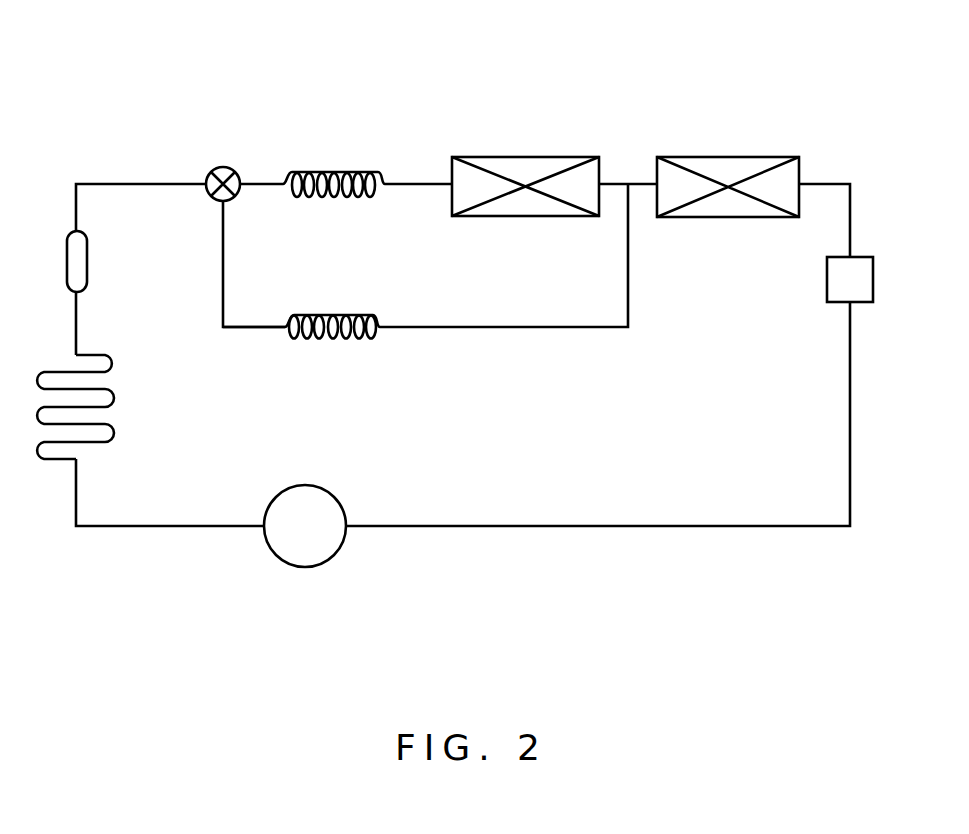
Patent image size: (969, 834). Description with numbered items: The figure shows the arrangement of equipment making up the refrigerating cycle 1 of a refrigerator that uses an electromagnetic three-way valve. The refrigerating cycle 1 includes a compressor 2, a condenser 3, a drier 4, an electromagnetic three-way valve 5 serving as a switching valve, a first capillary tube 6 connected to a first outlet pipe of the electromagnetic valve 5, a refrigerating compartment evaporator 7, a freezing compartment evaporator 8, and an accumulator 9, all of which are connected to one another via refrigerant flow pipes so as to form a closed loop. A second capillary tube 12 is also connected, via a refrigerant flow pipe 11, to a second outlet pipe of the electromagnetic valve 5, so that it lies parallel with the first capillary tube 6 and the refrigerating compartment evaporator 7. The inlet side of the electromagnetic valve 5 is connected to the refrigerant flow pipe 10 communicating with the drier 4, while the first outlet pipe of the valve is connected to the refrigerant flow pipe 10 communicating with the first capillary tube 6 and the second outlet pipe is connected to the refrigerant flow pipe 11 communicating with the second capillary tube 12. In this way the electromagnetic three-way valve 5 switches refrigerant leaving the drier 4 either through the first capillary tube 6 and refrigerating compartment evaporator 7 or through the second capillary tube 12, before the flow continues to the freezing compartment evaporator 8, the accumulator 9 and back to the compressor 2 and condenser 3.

The refrigerating cycle 1 is at (404, 140).
The compressor 2 is at (303, 567).
The condenser 3 is at (112, 400).
The drier 4 is at (87, 257).
The electromagnetic three-way valve 5 is at (212, 168).
The first capillary tube 6 is at (341, 172).
The refrigerating compartment evaporator 7 is at (481, 157).
The freezing compartment evaporator 8 is at (692, 157).
The accumulator 9 is at (873, 275).
The refrigerant flow pipe 10 is at (261, 185).
The refrigerant flow pipe 11 is at (250, 328).
The second capillary tube 12 is at (360, 337).